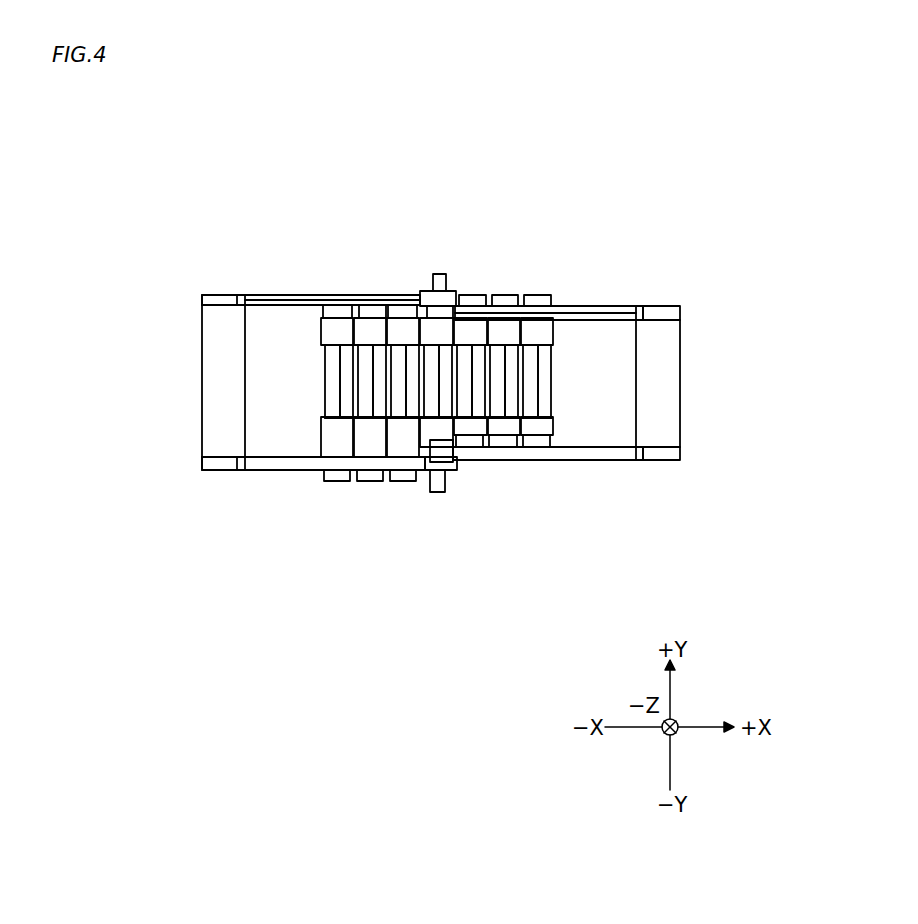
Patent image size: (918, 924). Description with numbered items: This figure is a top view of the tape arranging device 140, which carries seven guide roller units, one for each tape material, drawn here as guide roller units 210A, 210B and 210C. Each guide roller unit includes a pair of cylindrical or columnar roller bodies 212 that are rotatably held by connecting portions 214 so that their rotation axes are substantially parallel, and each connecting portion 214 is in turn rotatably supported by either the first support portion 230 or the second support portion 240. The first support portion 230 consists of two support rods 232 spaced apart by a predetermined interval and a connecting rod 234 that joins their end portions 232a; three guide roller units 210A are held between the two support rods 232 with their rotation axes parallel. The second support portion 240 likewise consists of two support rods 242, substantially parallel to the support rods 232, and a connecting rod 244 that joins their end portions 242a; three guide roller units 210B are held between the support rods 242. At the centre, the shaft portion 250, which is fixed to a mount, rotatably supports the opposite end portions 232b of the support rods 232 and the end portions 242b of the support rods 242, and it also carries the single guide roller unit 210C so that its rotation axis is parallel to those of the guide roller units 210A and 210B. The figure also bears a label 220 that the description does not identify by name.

The tape arranging device 140 is at (247, 102).
The linear guide unit 220 is at (750, 280).
The shaft portion 250 is at (436, 273).
The guide roller units 210B is at (507, 295).
The guide roller units 210A is at (342, 483).
The guide roller unit 210C is at (490, 472).
The first support portion 230 is at (352, 295).
The support rods 232 is at (404, 295).
The end portions 232a is at (235, 295).
The end portions 232b is at (447, 485).
The connecting portions 214 is at (322, 318).
The connecting rod 234 is at (202, 377).
The roller bodies 212 is at (404, 381).
The connecting rod 244 is at (682, 378).
The second support portion 240 is at (625, 306).
The support rods 242 is at (631, 306).
The end portions 242a is at (640, 462).
The end portions 242b is at (505, 491).